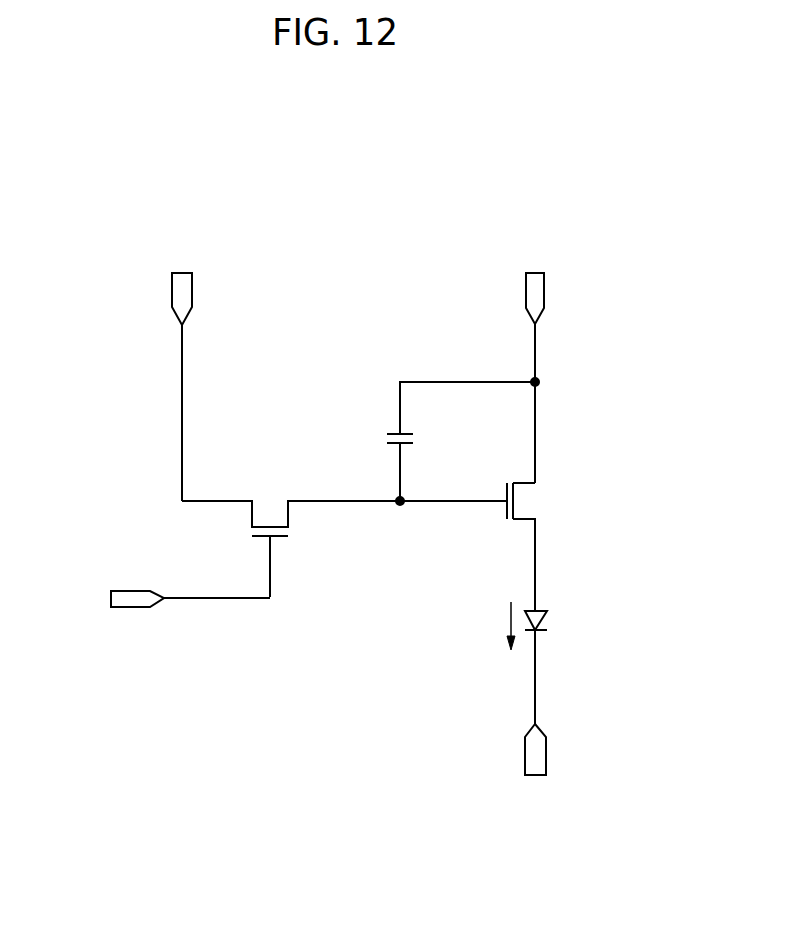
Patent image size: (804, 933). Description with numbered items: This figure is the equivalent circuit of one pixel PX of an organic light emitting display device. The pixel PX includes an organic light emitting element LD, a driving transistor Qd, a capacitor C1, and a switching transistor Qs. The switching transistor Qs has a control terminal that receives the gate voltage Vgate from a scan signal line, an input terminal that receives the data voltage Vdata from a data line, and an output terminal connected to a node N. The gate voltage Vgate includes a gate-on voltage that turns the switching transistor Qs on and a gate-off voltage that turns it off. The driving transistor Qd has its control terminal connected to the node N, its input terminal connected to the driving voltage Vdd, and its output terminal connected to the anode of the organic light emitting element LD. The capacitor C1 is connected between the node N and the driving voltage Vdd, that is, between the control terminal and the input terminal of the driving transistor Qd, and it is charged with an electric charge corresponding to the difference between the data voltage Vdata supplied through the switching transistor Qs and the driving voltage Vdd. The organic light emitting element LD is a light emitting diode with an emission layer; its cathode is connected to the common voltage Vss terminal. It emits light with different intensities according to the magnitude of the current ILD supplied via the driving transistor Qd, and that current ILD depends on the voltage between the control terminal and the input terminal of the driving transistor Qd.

The pixel PX is at (346, 182).
The data voltage Vdata is at (183, 370).
The driving voltage Vdd is at (534, 360).
The common voltage Vss is at (535, 766).
The gate voltage Vgate is at (160, 598).
The switching transistor Qs is at (291, 533).
The driving transistor Qd is at (537, 547).
The capacitor C1 is at (461, 441).
The node N is at (442, 487).
The organic light emitting element LD is at (551, 665).
The current ILD is at (498, 626).